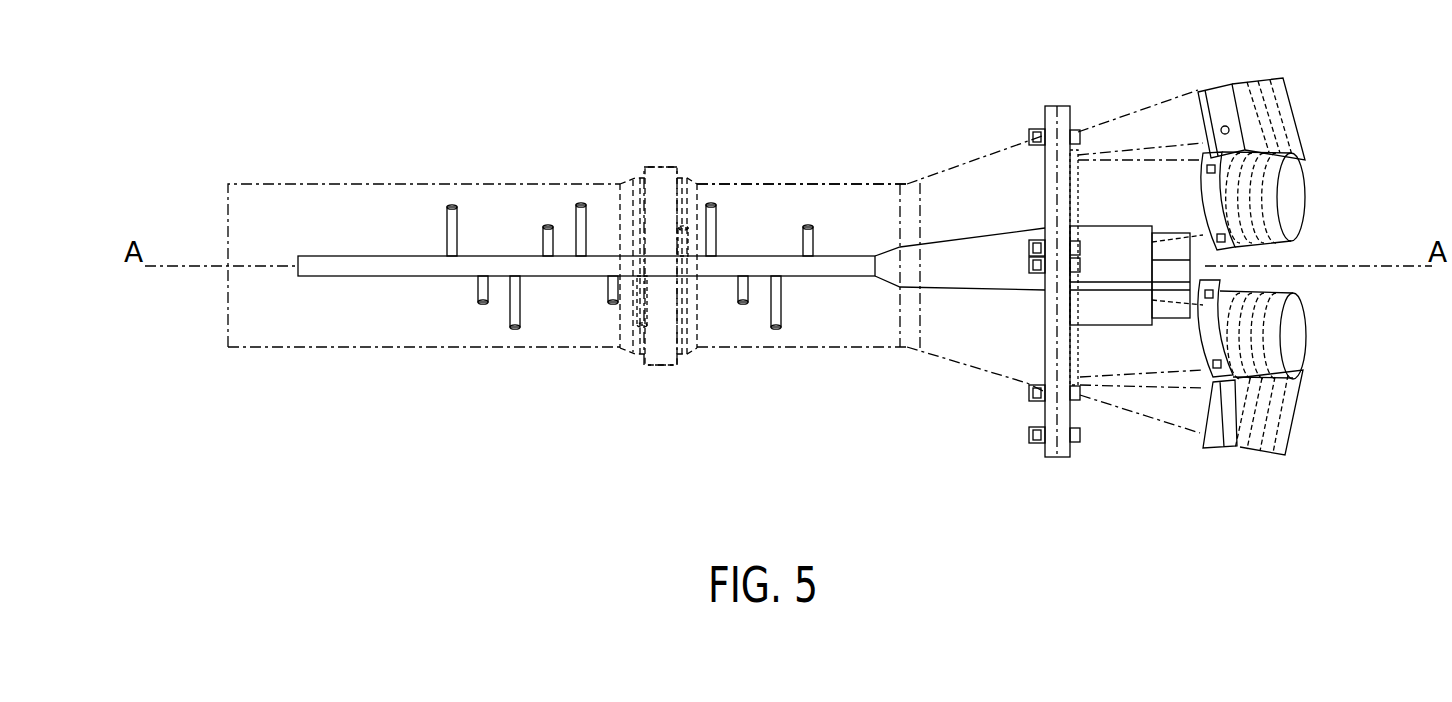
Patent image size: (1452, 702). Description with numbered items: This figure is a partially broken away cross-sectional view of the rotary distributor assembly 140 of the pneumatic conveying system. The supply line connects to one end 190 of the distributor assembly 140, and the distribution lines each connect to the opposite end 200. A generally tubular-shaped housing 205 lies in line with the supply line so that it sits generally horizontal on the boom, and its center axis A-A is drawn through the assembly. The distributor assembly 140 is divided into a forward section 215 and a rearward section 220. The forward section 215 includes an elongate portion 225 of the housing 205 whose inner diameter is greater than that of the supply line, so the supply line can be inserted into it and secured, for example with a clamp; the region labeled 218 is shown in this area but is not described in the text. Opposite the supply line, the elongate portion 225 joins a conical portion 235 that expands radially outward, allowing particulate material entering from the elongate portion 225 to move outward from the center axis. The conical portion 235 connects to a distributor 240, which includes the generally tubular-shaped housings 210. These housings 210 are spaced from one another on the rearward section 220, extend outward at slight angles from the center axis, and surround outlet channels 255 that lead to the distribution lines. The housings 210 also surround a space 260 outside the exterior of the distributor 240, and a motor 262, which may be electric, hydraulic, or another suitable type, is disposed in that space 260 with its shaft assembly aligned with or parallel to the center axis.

The distributor assembly 140 is at (602, 147).
The one end 190 is at (213, 195).
The opposite end 200 is at (1311, 279).
The housing 205 is at (453, 277).
The housings 210 is at (1303, 193).
The forward section 215 is at (917, 370).
The waveguide section 218 is at (330, 383).
The rearward section 220 is at (1133, 437).
The elongate portion 225 is at (772, 183).
The conical portion 235 is at (958, 182).
The distributor 240 is at (1050, 105).
The outlet channels 255 is at (1303, 362).
The space 260 is at (1268, 257).
The motor 262 is at (1125, 240).